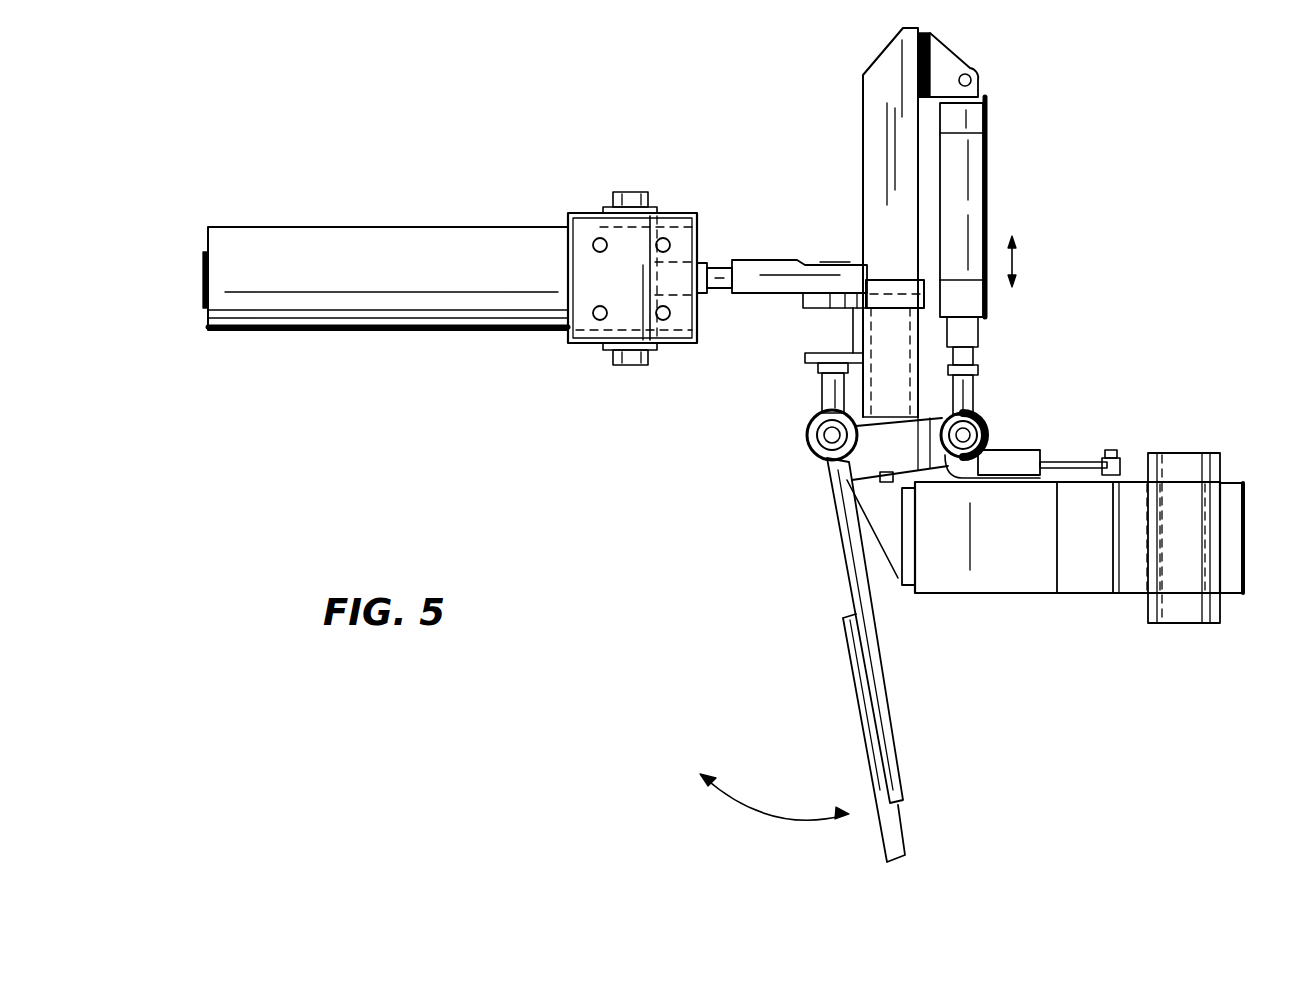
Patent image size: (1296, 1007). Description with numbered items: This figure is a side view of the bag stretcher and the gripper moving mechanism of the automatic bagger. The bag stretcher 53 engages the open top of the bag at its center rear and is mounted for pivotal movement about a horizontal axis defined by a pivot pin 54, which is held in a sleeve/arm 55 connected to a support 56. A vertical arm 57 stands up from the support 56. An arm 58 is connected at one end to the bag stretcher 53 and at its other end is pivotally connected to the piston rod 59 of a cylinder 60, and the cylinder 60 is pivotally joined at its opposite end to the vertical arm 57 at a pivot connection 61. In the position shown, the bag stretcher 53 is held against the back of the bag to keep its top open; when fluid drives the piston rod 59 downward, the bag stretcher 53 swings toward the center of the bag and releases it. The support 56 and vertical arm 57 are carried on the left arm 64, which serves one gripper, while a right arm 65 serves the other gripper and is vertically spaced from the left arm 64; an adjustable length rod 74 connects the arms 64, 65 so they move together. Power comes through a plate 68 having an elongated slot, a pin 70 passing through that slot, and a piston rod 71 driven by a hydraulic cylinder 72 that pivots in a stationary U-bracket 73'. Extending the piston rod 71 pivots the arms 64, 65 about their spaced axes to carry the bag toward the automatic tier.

The bag stretcher 53 is at (903, 721).
The pivot pin 54 is at (820, 447).
The sleeve/arm 55 is at (822, 393).
The support 56 is at (898, 283).
The vertical arm 57 is at (862, 142).
The arm 58 is at (932, 464).
The piston rod 59 is at (978, 352).
The cylinder 60 is at (975, 203).
The pivot connection 61 is at (968, 74).
The left arm 64 is at (877, 347).
The right arm 65 is at (1025, 578).
The plate 68 is at (810, 303).
The pin 70 is at (815, 262).
The piston rod 71 is at (700, 262).
The hydraulic cylinder 72 is at (467, 316).
The stationary U-bracket 73' is at (638, 295).
The adjustable length rod 74 is at (1018, 449).